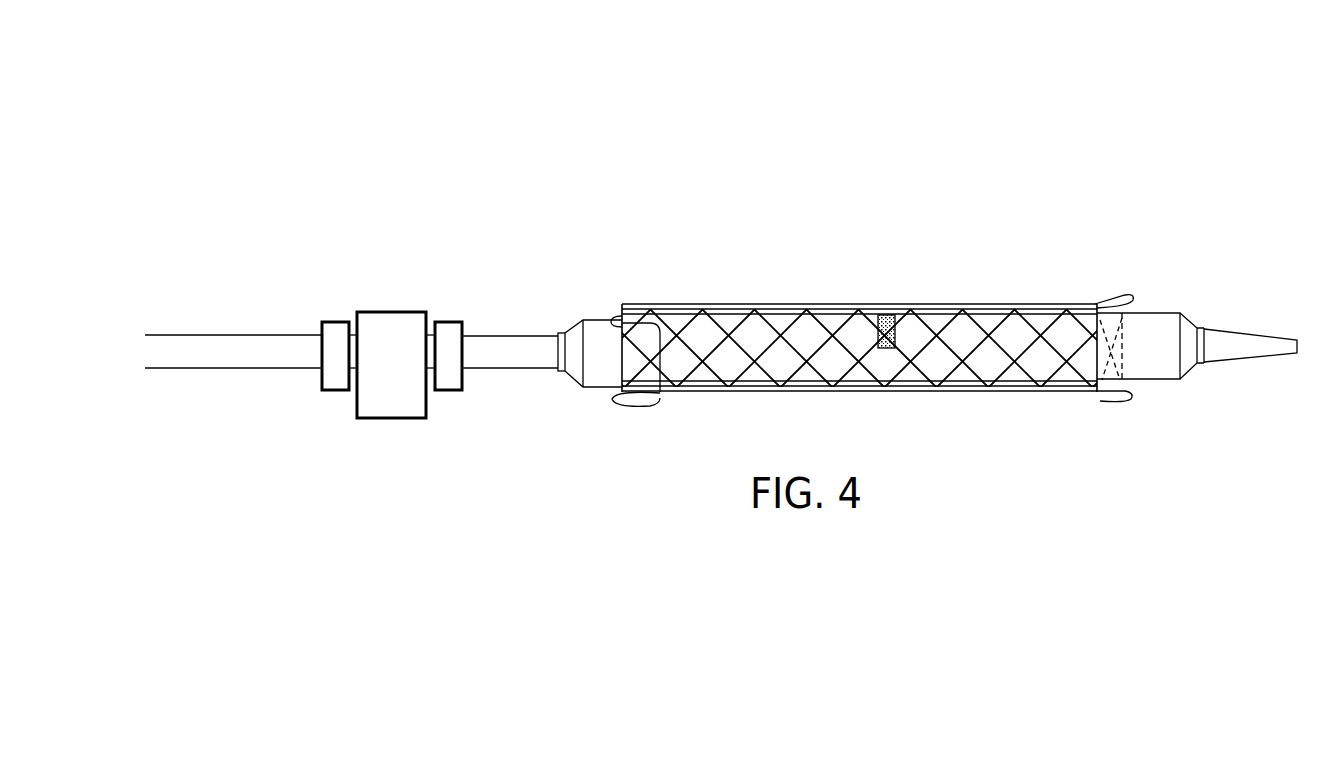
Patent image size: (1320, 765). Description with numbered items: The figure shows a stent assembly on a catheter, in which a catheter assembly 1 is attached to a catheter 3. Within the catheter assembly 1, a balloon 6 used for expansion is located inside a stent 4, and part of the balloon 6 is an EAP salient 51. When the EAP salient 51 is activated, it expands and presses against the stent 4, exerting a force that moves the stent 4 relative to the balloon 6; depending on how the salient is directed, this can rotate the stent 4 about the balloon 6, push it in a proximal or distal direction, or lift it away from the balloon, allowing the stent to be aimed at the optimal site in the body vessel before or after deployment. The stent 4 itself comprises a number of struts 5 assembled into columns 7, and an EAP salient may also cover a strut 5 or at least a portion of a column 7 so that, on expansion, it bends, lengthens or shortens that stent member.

The catheter assembly 1 is at (980, 287).
The catheter 3 is at (233, 347).
The stent 4 is at (757, 303).
The strut 5 is at (662, 305).
The balloon 6 is at (803, 335).
The column 7 is at (728, 318).
The EAP salient 51 is at (888, 305).